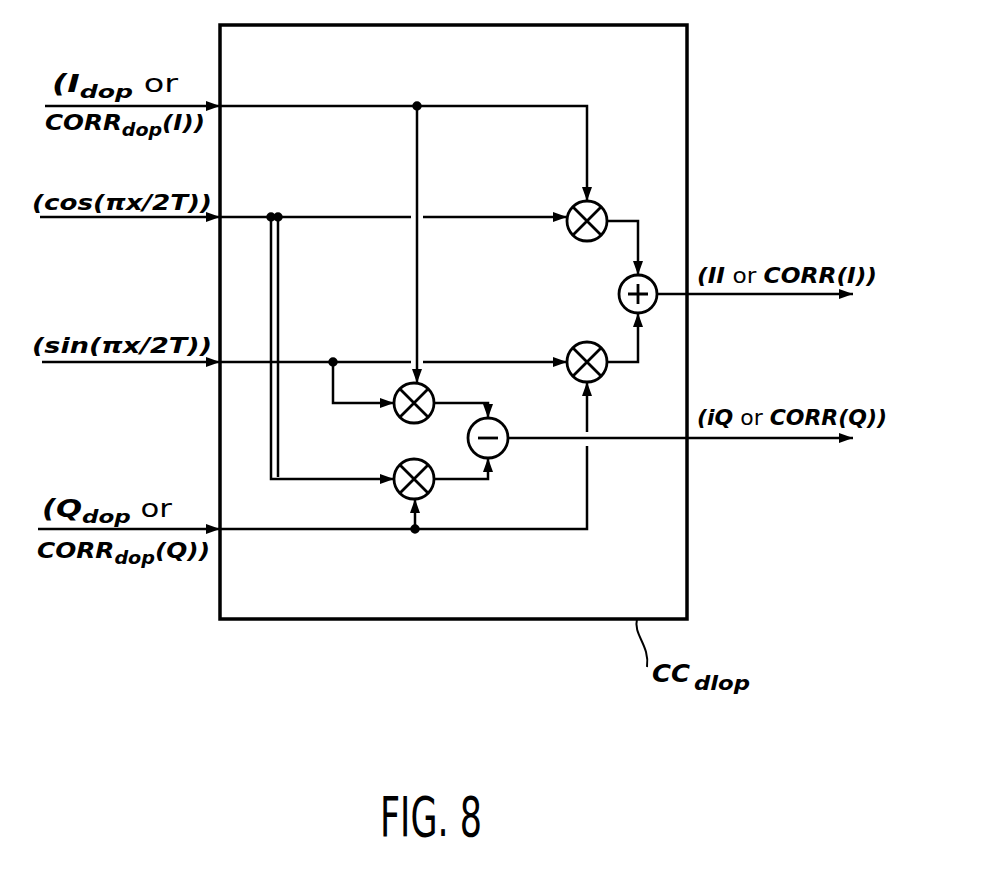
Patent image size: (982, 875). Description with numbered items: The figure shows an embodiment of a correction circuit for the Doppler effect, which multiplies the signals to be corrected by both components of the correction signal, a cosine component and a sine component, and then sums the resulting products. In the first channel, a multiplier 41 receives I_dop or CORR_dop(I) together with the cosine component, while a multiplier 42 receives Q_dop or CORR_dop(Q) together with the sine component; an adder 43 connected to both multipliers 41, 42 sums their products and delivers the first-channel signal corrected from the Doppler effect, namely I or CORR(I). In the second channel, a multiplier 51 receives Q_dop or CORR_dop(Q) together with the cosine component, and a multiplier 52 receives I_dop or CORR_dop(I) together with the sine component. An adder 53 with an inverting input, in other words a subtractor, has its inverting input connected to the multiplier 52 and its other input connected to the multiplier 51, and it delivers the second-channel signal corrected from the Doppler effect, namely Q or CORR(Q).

The multiplier 41 is at (617, 206).
The multiplier 42 is at (603, 378).
The adder 43 is at (619, 294).
The multiplier 51 is at (397, 489).
The multiplier 52 is at (398, 414).
The adder with inverting input 53 is at (502, 452).